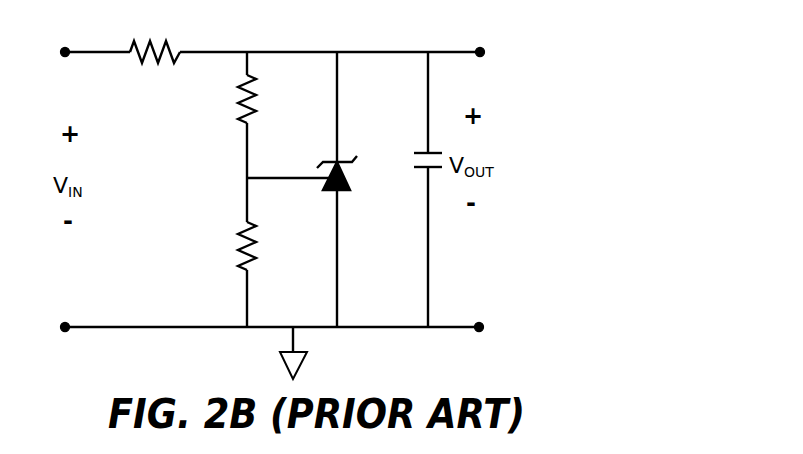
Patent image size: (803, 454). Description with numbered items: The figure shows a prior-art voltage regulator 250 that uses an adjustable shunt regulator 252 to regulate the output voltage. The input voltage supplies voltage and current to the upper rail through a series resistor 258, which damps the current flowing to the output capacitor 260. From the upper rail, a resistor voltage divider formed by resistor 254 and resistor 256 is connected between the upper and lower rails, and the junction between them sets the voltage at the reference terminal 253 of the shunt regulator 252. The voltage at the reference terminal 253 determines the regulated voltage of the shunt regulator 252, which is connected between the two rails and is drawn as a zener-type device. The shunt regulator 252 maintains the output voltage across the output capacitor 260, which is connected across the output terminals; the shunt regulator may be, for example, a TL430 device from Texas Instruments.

The voltage regulator 250 is at (560, 106).
The resistor 258 is at (148, 58).
The resistor 254 is at (247, 117).
The resistor 256 is at (247, 240).
The reference terminal 253 is at (308, 174).
The adjustable shunt regulator 252 is at (350, 170).
The output capacitor 260 is at (418, 170).